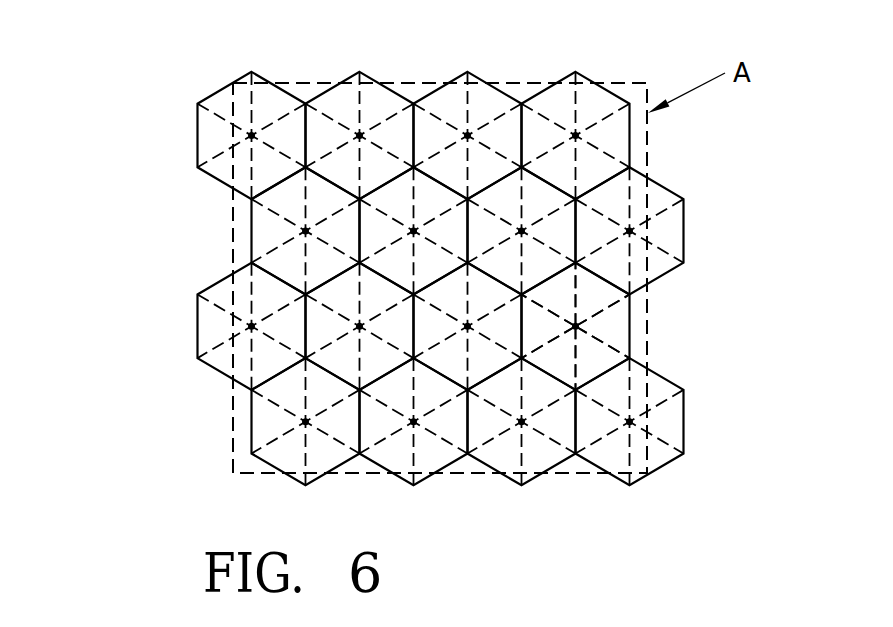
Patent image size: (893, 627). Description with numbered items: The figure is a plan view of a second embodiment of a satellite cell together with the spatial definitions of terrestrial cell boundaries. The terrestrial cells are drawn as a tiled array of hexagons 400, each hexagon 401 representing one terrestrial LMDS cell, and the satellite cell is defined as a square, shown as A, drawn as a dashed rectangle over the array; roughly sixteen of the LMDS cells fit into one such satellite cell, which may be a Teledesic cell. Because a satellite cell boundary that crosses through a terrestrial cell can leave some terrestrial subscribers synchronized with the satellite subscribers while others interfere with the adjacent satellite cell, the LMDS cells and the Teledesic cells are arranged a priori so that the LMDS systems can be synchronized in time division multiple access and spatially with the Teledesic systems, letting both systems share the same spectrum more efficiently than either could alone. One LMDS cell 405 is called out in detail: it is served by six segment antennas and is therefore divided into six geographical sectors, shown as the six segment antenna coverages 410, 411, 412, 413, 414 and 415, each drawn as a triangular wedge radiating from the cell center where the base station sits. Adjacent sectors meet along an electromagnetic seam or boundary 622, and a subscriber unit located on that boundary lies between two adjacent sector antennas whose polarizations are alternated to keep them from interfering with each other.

The hexagonal cell array / display panel 400 is at (172, 336).
The hexagonal cell 401 is at (172, 140).
The LMDS cell 405 is at (613, 324).
The segment antenna coverage 410 is at (541, 278).
The segment antenna coverage 411 is at (594, 278).
The segment antenna coverage 412 is at (618, 347).
The segment antenna coverage 413 is at (595, 370).
The segment antenna coverage 414 is at (550, 378).
The segment antenna coverage 415 is at (535, 337).
The electromagnetic seam or boundary 622 is at (642, 306).